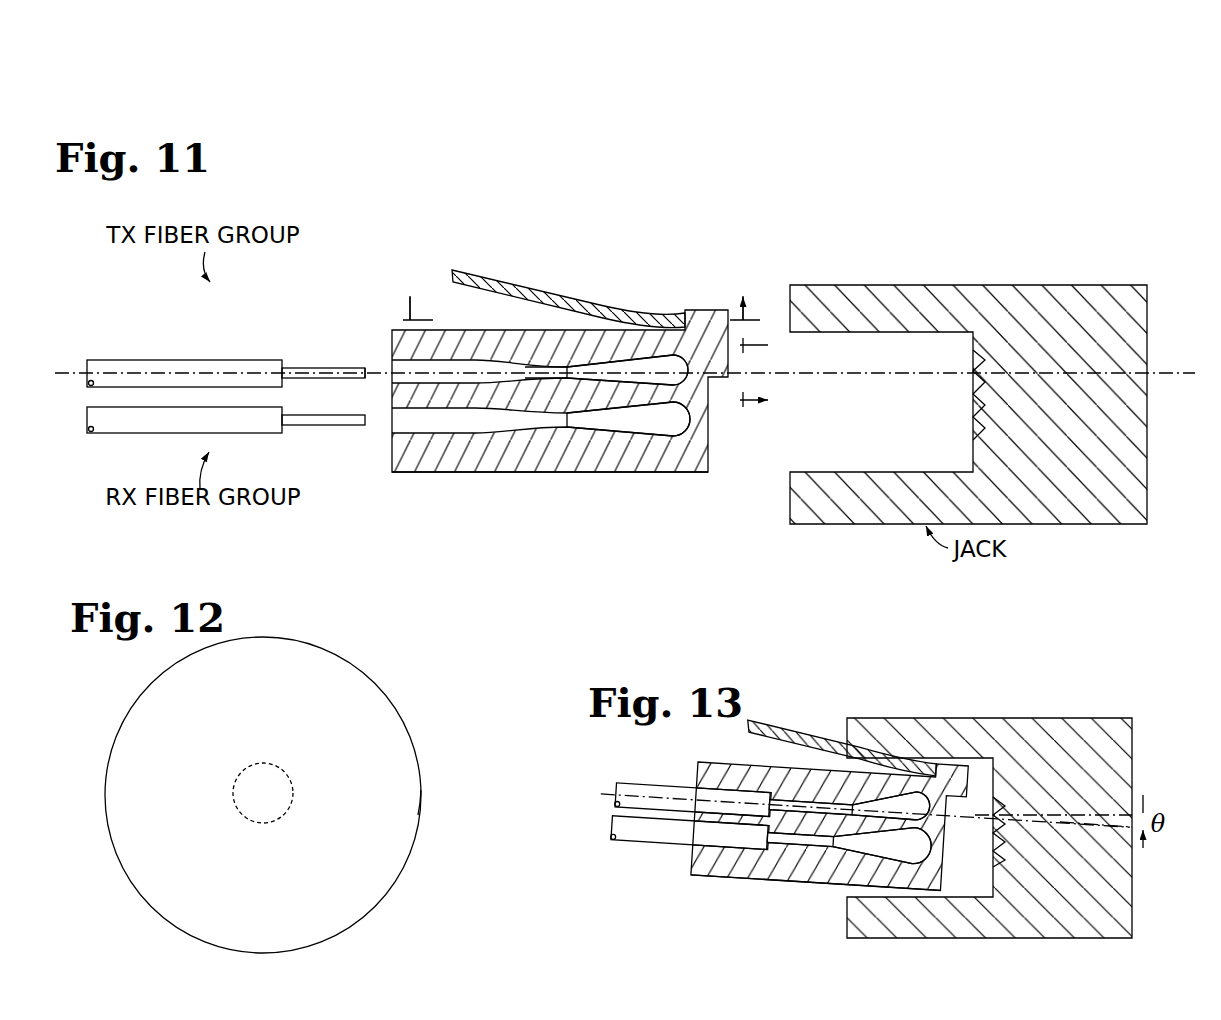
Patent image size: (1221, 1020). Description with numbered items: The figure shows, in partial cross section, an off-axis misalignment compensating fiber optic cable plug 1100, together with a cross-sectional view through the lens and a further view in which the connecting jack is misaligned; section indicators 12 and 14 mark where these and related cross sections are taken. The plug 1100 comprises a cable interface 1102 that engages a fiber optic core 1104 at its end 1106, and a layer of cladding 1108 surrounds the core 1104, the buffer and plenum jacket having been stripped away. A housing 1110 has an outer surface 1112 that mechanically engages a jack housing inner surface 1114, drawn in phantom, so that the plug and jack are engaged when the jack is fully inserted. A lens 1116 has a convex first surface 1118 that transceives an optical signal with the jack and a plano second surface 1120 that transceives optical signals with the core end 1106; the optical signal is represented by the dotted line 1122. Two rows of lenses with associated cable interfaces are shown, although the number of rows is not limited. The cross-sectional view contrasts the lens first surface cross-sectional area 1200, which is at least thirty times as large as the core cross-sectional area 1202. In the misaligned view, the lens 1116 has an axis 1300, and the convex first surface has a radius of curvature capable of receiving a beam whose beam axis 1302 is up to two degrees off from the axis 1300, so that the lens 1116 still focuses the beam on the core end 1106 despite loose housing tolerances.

In FIG. 11, the plug 1100 is at (552, 333).
In FIG. 11, the cable interface 1102 is at (565, 388).
In FIG. 11, the fiber optic core 1104 is at (316, 368).
In FIG. 11, the end 1106 is at (368, 381).
In FIG. 13, the end 1106 is at (846, 801).
In FIG. 11, the cladding 1108 is at (160, 360).
In FIG. 11, the housing 1110 is at (605, 450).
In FIG. 13, the housing 1110 is at (760, 868).
In FIG. 11, the outer surface 1112 is at (420, 473).
In FIG. 13, the outer surface 1112 is at (811, 889).
In FIG. 11, the jack housing inner surface 1114 is at (941, 334).
In FIG. 13, the jack housing inner surface 1114 is at (981, 891).
In FIG. 11, the lens 1116 is at (626, 361).
In FIG. 13, the lens 1116 is at (877, 802).
In FIG. 11, the lens first surface 1118 is at (691, 371).
In FIG. 12, the lens first surface 1118 is at (422, 800).
In FIG. 13, the lens first surface 1118 is at (919, 806).
In FIG. 11, the lens second surface 1120 is at (563, 370).
In FIG. 11, the optical signal 1122 is at (830, 376).
In FIG. 12, the lens first surface cross-sectional area 1200 is at (263, 795).
In FIG. 12, the core cross-sectional area 1202 is at (240, 817).
In FIG. 13, the lens axis 1300 is at (1082, 818).
In FIG. 13, the beam axis 1302 is at (1082, 828).
In FIG. 11, the section line 12 is at (769, 374).
In FIG. 11, the section line 14 is at (576, 294).